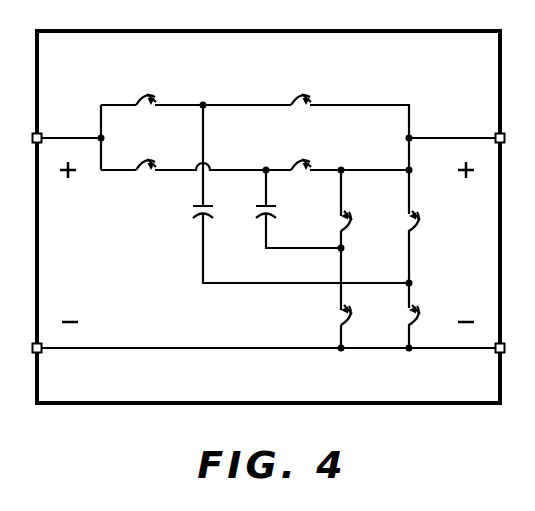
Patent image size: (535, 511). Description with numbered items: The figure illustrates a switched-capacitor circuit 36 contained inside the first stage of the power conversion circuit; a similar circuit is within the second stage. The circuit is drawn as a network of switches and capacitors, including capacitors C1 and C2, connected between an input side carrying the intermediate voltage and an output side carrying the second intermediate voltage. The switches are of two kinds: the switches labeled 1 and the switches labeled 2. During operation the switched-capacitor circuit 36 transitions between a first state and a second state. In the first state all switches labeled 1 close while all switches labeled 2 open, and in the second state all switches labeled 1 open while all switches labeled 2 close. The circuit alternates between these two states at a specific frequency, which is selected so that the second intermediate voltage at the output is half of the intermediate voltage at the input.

The switched-capacitor circuit 36 is at (482, 66).
The switches labeled 1 is at (278, 209).
The switches labeled 2 is at (278, 209).
The capacitor C1 is at (287, 194).
The capacitor C2 is at (285, 209).